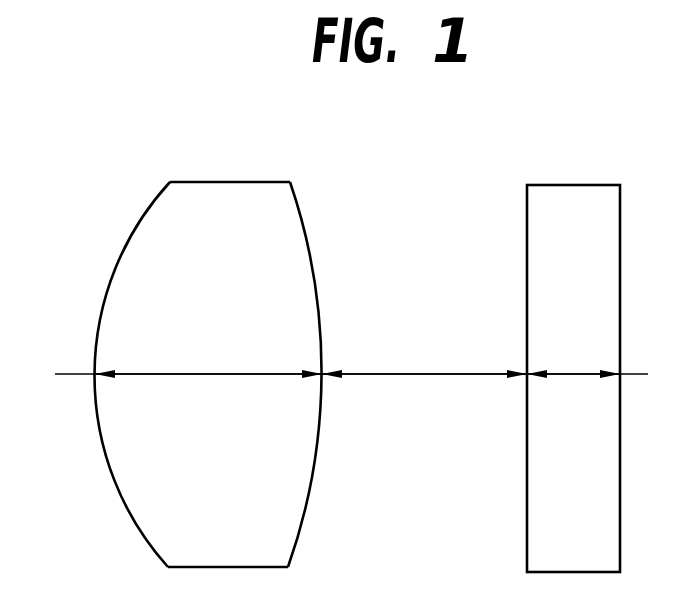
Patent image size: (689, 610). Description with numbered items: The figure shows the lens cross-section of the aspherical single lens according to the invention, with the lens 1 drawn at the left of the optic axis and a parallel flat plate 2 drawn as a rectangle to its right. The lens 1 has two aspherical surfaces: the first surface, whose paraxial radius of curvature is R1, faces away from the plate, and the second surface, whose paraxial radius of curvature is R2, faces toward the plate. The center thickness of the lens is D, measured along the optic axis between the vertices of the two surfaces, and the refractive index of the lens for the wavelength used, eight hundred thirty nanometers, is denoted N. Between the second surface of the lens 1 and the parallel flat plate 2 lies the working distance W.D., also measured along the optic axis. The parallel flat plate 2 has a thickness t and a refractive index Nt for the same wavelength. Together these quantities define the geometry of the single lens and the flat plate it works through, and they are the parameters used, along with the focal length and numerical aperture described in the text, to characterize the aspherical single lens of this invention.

The objective lens 1 is at (217, 345).
The cover glass (parallel plate) 2 is at (573, 348).
The paraxial radius of curvature of the first surface R1 is at (108, 472).
The paraxial radius of curvature of the second surface R2 is at (308, 493).
The refractive index of the lens N is at (262, 267).
The refractive index of the parallel flat plate Nt is at (578, 267).
The center thickness of the lens D is at (208, 361).
The working distance W.D. is at (424, 362).
The thickness of the parallel flat plate t is at (573, 362).